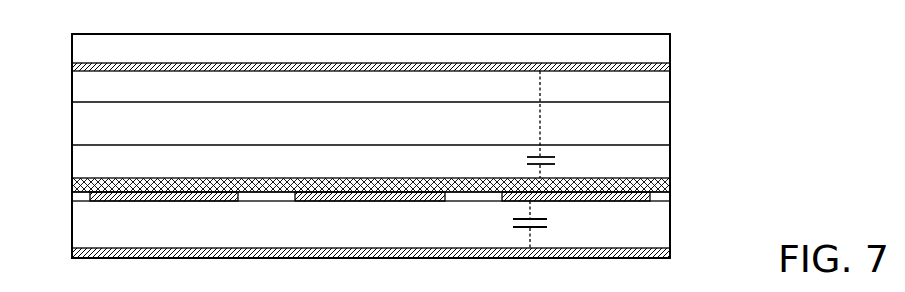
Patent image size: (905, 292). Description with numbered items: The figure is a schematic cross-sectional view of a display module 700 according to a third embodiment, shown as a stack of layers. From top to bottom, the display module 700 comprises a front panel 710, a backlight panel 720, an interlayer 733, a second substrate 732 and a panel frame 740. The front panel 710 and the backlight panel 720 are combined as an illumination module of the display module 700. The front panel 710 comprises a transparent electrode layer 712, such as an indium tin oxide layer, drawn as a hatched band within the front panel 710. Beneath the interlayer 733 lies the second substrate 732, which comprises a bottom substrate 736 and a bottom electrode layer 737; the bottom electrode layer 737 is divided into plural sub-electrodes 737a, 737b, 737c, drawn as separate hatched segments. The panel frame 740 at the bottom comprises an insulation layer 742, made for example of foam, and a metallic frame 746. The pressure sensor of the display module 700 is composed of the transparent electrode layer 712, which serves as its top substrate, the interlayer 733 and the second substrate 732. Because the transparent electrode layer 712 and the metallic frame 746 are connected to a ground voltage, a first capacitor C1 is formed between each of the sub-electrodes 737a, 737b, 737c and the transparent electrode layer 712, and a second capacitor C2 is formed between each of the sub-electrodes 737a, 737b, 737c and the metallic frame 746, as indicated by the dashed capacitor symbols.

The display module 700 is at (748, 46).
The front panel 710 is at (64, 34).
The transparent electrode layer 712 is at (670, 67).
The backlight panel 720 is at (371, 134).
The second substrate 732 is at (426, 198).
The interlayer 733 is at (662, 170).
The bottom substrate 736 is at (670, 182).
The bottom electrode layer 737 is at (399, 207).
The sub-electrode 737a is at (588, 203).
The sub-electrode 737b is at (350, 203).
The sub-electrode 737c is at (166, 202).
The panel frame 740 is at (371, 234).
The insulation layer 742 is at (670, 222).
The metallic frame 746 is at (670, 252).
The first capacitor C1 is at (528, 124).
The second capacitor C2 is at (515, 224).